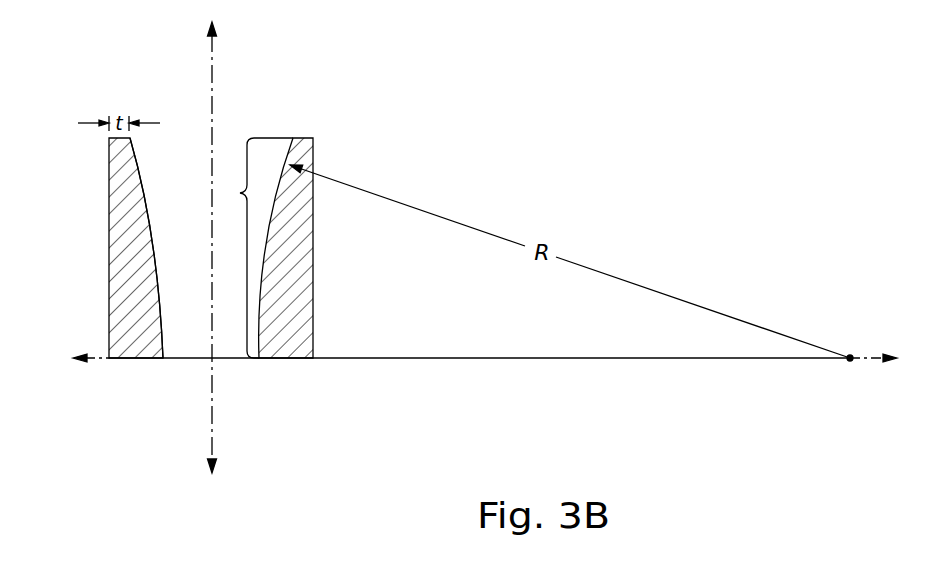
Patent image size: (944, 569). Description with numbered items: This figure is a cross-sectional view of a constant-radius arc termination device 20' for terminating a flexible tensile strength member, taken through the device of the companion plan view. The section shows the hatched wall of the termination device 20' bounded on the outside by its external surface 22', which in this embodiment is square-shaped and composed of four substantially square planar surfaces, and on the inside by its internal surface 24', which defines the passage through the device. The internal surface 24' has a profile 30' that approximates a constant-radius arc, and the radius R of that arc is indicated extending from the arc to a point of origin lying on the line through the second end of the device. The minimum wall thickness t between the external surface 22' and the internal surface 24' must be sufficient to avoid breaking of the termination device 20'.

The termination device 20' is at (311, 211).
The external surface 22' is at (102, 248).
The internal surface 24' is at (159, 245).
The profile 30' is at (248, 248).